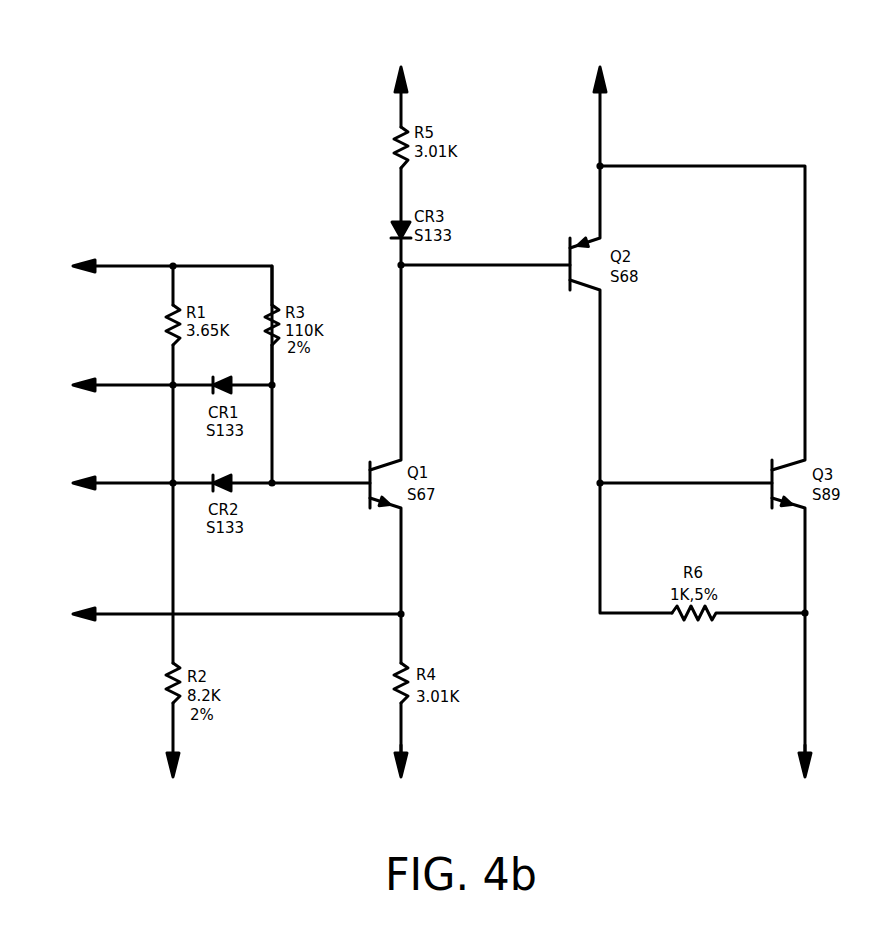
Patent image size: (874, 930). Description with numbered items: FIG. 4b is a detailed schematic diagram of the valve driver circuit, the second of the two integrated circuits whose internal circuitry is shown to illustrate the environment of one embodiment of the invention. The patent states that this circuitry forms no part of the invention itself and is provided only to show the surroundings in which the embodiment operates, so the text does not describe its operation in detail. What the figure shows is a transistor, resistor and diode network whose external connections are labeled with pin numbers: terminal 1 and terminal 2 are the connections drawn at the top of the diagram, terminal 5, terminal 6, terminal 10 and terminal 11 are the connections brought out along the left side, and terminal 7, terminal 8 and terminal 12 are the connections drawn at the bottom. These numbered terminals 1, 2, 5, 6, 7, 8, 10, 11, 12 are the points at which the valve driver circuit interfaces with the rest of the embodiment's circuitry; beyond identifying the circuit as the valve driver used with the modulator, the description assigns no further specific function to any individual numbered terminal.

The terminal 1 (positive supply input) 1 is at (600, 68).
The terminal 2 (supply input to R5) 2 is at (401, 68).
The terminal 5 (Q1 base input) 5 is at (115, 484).
The terminal 6 (Q1 emitter) 6 is at (229, 615).
The terminal 7 (R4 ground return) 7 is at (401, 774).
The terminal 8 (R2 ground return) 8 is at (173, 753).
The terminal 10 (R1/R3 common) 10 is at (109, 267).
The terminal 11 (CR1 output) 11 is at (109, 386).
The terminal 12 (Q3 emitter output) 12 is at (803, 774).